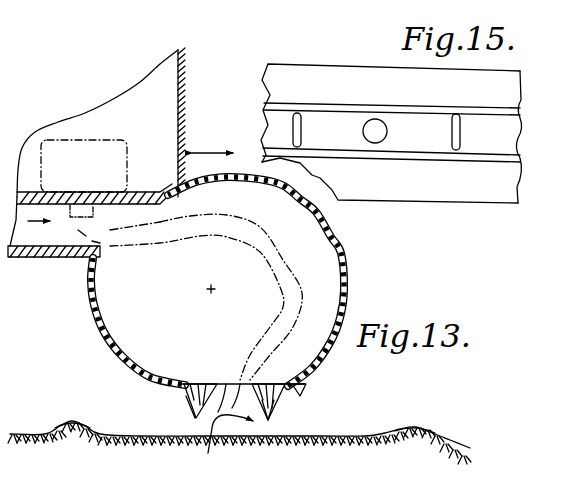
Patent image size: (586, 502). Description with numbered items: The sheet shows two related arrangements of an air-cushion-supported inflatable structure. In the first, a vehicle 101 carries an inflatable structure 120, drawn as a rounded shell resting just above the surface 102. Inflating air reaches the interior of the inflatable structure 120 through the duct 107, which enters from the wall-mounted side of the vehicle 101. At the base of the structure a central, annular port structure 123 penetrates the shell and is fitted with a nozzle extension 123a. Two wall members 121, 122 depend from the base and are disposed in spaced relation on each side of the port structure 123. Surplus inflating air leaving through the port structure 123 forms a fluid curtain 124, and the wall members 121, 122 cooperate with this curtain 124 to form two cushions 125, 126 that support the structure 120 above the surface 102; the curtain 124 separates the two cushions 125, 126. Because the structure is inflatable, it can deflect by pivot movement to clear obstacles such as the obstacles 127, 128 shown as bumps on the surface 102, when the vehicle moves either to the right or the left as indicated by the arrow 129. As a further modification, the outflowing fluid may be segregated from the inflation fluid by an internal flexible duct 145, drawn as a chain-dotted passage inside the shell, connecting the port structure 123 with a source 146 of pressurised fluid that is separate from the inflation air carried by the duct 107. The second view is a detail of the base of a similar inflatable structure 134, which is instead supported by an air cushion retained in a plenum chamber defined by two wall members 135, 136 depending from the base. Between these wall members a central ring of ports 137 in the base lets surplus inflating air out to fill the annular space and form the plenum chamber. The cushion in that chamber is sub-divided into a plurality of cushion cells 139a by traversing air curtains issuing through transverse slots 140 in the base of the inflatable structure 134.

In FIG. 13, the vehicle 101 is at (183, 58).
In FIG. 13, the surface 102 is at (126, 435).
In FIG. 13, the duct 107 is at (42, 250).
In FIG. 13, the inflatable structure 120 is at (347, 283).
In FIG. 13, the wall member 121 is at (272, 417).
In FIG. 13, the wall member 122 is at (190, 408).
In FIG. 13, the central annular port structure 123 is at (228, 386).
In FIG. 13, the nozzle extension 123a is at (260, 384).
In FIG. 13, the fluid curtain 124 is at (228, 444).
In FIG. 13, the cushion 125 is at (205, 383).
In FIG. 13, the cushion 126 is at (280, 402).
In FIG. 13, the obstacle 127 is at (72, 420).
In FIG. 13, the obstacle 128 is at (415, 427).
In FIG. 13, the arrow 129 is at (206, 150).
In FIG. 15, the inflatable structure 134 is at (492, 67).
In FIG. 15, the wall member 135 is at (402, 160).
In FIG. 15, the wall member 136 is at (297, 100).
In FIG. 15, the ring of ports 137 is at (372, 119).
In FIG. 15, the cushion cell 139a is at (452, 129).
In FIG. 15, the transverse slot 140 is at (292, 119).
In FIG. 13, the internal flexible duct 145 is at (270, 248).
In FIG. 13, the source of pressurised fluid 146 is at (116, 145).